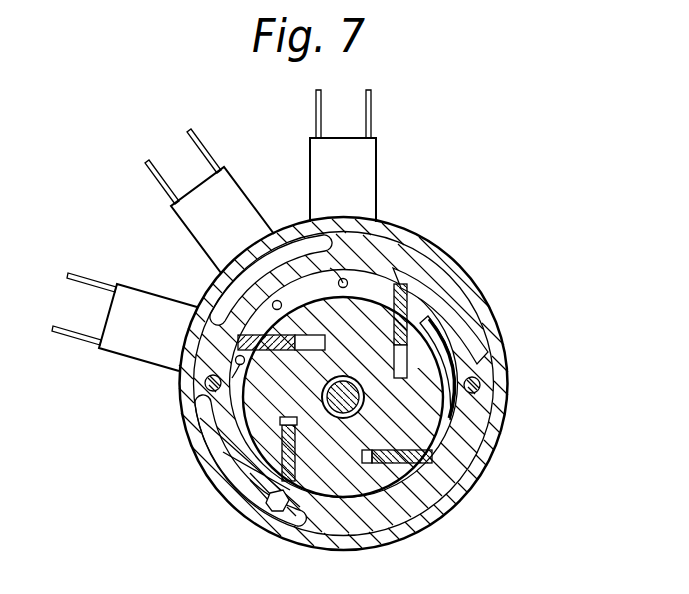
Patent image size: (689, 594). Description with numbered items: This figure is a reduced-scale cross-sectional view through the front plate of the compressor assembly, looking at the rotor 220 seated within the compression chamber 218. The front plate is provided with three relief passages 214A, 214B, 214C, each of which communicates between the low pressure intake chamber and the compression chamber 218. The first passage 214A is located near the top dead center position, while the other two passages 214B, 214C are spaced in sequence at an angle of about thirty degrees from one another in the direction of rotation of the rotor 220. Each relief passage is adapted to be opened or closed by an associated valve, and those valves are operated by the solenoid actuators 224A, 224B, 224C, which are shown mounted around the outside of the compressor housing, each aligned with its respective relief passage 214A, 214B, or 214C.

The first relief passage 214A is at (375, 283).
The second relief passage 214B is at (277, 306).
The third relief passage 214C is at (200, 406).
The compression chamber 218 is at (428, 266).
The rotor 220 is at (353, 474).
The solenoid actuator 224A is at (380, 147).
The solenoid actuator 224B is at (243, 191).
The solenoid actuator 224C is at (110, 355).